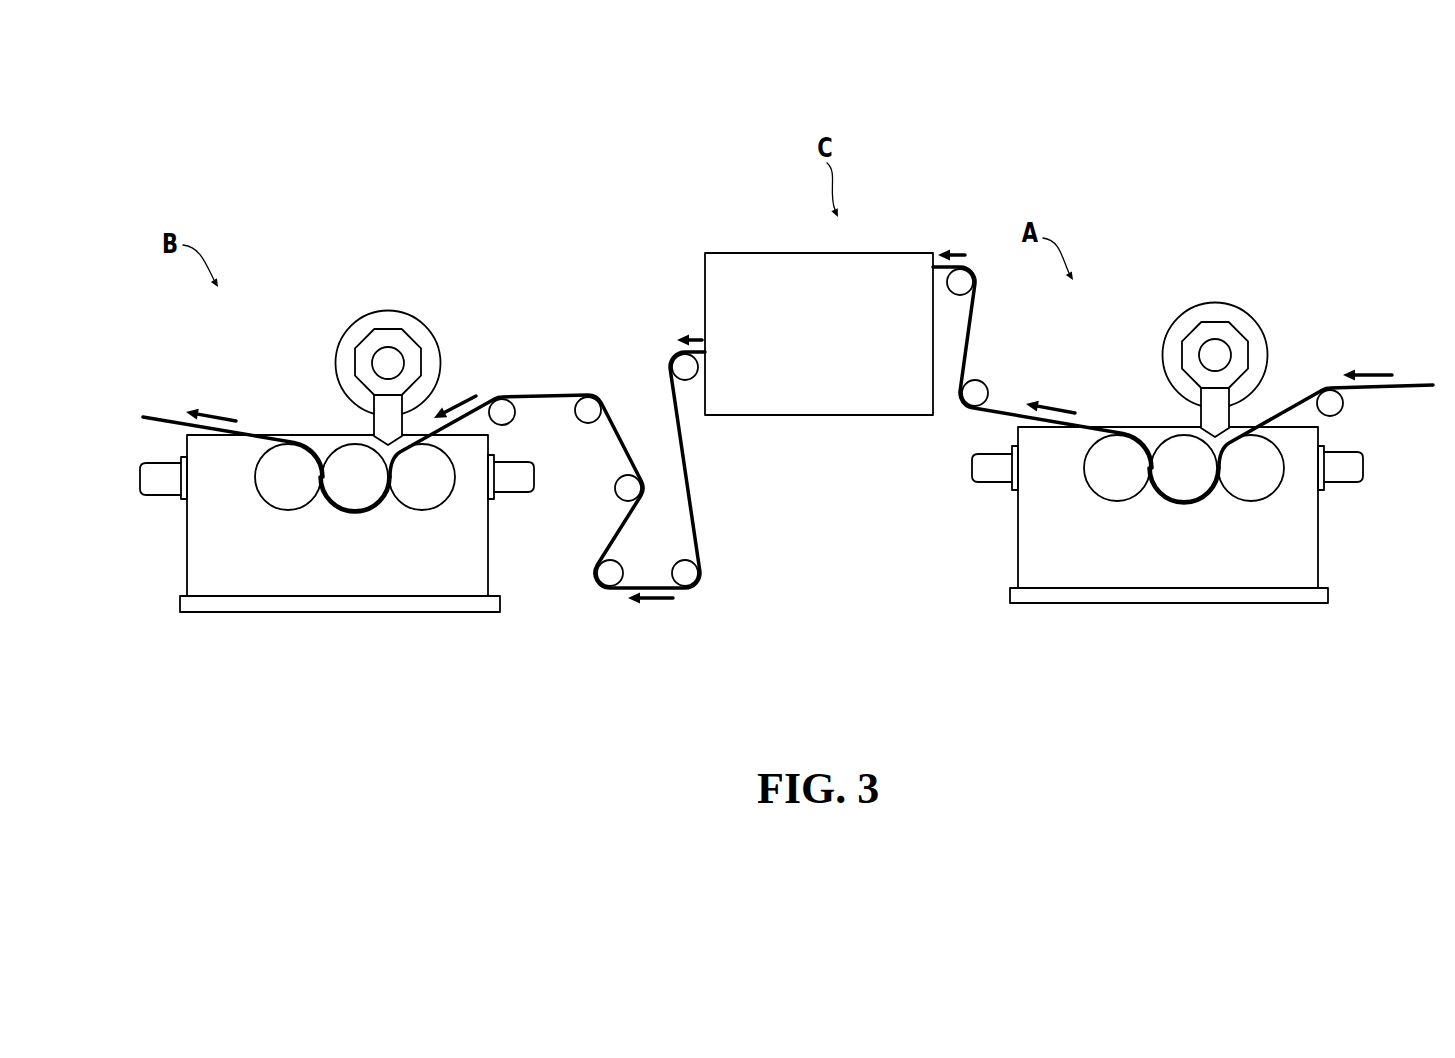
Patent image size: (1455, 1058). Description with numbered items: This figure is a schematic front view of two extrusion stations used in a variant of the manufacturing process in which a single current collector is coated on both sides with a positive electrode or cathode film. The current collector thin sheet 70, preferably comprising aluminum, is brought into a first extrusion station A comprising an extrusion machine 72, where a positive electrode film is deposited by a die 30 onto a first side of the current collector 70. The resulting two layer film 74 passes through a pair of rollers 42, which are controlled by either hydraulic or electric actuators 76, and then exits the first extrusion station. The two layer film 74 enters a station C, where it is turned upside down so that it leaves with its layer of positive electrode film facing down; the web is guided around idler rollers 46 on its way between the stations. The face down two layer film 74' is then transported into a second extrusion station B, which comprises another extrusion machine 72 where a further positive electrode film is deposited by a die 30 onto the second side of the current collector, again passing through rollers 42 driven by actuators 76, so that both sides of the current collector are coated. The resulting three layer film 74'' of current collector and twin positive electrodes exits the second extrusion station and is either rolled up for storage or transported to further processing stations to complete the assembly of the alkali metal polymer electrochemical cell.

The die 30 is at (380, 423).
The rollers 42 is at (420, 497).
The idler rollers 46 is at (627, 488).
The current collector thin sheet 70 is at (1429, 383).
The extrusion machine 72 is at (387, 313).
The two layer film 74 is at (1076, 377).
The face down two layer film 74' is at (547, 466).
The three layer film 74'' is at (266, 433).
The actuators 76 is at (165, 487).